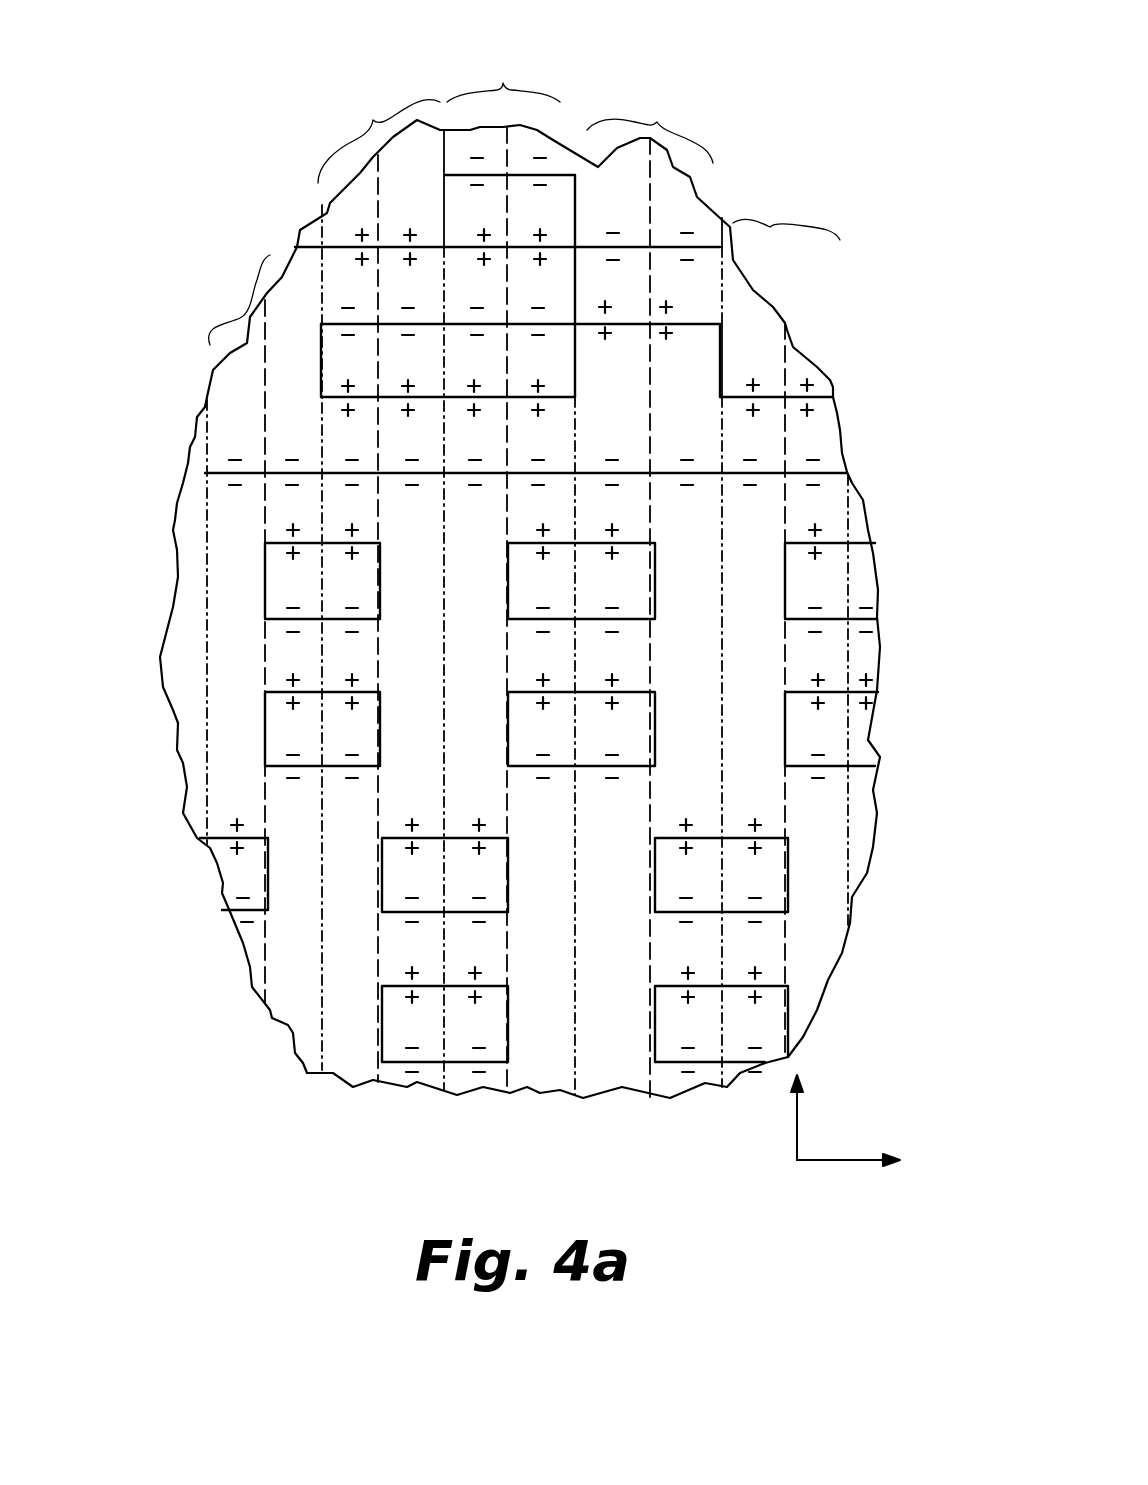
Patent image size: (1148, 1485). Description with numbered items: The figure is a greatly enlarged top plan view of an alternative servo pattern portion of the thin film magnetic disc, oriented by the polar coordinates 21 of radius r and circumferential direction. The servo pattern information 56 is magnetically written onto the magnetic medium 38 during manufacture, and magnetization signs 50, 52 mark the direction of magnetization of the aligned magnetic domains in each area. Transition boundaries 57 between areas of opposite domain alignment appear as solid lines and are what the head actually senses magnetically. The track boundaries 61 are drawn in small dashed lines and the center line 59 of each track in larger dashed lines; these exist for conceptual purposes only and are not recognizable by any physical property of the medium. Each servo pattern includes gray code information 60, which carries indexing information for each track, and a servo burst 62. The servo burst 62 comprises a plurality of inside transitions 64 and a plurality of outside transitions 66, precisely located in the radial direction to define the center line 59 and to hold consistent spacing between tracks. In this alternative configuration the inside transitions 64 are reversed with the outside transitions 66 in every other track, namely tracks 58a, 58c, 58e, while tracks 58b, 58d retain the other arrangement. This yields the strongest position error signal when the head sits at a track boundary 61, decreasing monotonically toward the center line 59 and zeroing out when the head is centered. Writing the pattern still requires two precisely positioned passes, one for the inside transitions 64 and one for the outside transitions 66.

The polar coordinates 21 is at (797, 1138).
The magnetic medium 38 is at (850, 153).
The magnetization sign 50 is at (668, 311).
The magnetization sign 52 is at (815, 460).
The servo pattern information 56 is at (889, 352).
The transition boundary 57 is at (556, 173).
The track 58a is at (240, 285).
The track 58b is at (379, 133).
The track 58c is at (503, 75).
The track 58d is at (650, 124).
The track 58e is at (786, 219).
The center line 59 is at (654, 262).
The gray code information 60 is at (182, 145).
The track boundary 61 is at (722, 307).
The servo burst 62 is at (162, 487).
The inside transitions 64 is at (660, 530).
The outside transitions 66 is at (505, 530).